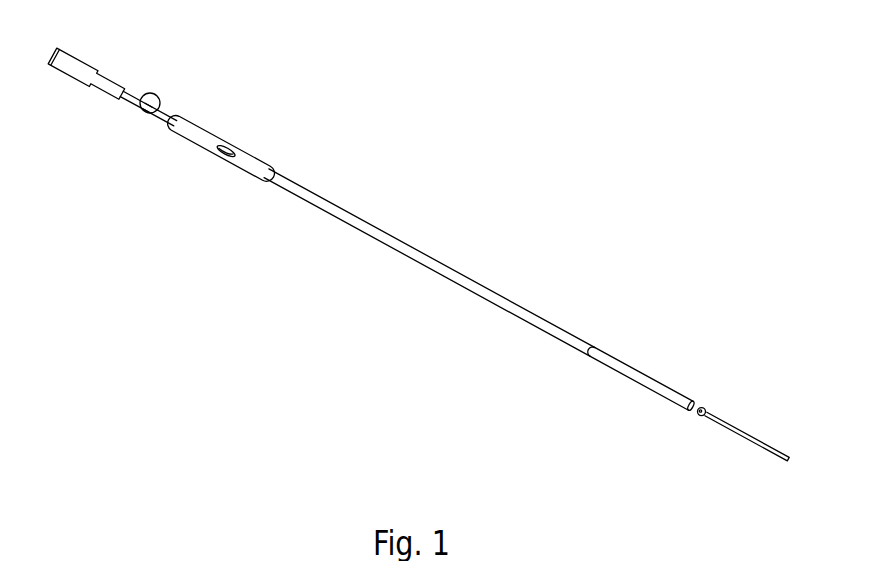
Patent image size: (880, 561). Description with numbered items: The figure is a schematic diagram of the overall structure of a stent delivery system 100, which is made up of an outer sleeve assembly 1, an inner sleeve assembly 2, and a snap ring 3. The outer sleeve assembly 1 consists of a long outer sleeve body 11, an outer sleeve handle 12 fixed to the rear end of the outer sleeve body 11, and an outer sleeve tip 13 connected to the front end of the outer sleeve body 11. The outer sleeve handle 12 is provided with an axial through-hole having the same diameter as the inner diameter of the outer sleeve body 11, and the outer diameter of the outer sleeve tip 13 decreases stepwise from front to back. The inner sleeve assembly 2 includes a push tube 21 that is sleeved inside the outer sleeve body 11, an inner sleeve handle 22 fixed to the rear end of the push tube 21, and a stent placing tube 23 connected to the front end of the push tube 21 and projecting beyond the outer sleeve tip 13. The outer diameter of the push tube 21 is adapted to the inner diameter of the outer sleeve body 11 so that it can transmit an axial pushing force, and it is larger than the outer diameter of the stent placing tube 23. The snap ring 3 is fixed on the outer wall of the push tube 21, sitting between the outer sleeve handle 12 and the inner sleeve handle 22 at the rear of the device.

The stent delivery system 100 is at (158, 250).
The outer sleeve assembly 1 is at (405, 227).
The outer sleeve body 11 is at (418, 259).
The outer sleeve handle 12 is at (237, 166).
The outer sleeve tip 13 is at (690, 411).
The inner sleeve assembly 2 is at (170, 112).
The push tube 21 is at (152, 115).
The inner sleeve handle 22 is at (102, 93).
The stent placing tube 23 is at (731, 431).
The snap ring 3 is at (155, 93).